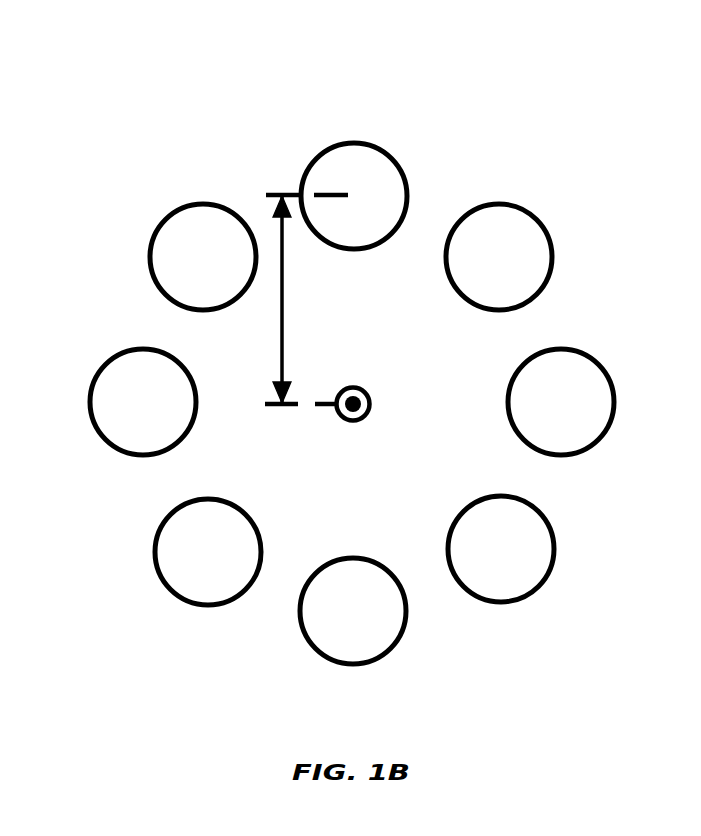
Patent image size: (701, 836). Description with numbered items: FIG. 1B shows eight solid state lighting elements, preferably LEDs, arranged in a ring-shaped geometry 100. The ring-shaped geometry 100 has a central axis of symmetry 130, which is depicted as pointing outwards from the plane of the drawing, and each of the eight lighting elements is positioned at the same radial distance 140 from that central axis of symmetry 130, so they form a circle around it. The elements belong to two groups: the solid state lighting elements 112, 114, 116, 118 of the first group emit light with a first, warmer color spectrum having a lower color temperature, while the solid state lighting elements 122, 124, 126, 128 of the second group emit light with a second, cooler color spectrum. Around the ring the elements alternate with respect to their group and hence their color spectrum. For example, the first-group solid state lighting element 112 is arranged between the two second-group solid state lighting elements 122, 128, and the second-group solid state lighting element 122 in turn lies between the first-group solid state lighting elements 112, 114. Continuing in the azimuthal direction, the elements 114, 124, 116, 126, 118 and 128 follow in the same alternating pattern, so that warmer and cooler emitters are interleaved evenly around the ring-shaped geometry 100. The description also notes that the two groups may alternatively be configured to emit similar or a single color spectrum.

The ring-shaped geometry 100 is at (110, 118).
The solid state lighting element 112 is at (350, 140).
The solid state lighting element 114 is at (102, 363).
The solid state lighting element 116 is at (302, 630).
The solid state lighting element 118 is at (588, 350).
The solid state lighting element 122 is at (148, 247).
The solid state lighting element 124 is at (170, 592).
The solid state lighting element 126 is at (518, 603).
The solid state lighting element 128 is at (508, 202).
The central axis of symmetry 130 is at (365, 387).
The radial distance 140 is at (283, 263).